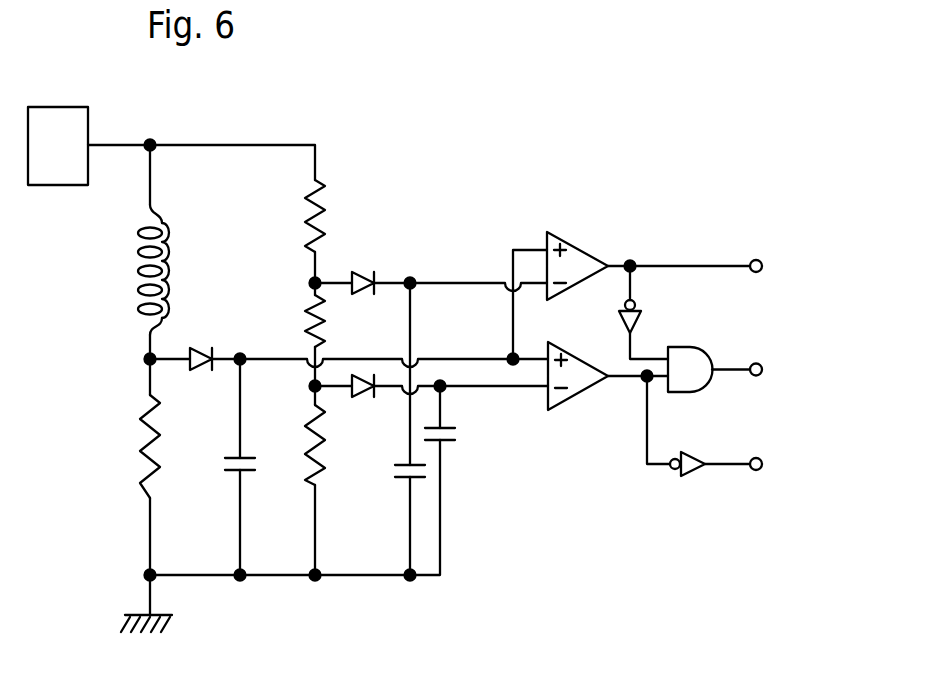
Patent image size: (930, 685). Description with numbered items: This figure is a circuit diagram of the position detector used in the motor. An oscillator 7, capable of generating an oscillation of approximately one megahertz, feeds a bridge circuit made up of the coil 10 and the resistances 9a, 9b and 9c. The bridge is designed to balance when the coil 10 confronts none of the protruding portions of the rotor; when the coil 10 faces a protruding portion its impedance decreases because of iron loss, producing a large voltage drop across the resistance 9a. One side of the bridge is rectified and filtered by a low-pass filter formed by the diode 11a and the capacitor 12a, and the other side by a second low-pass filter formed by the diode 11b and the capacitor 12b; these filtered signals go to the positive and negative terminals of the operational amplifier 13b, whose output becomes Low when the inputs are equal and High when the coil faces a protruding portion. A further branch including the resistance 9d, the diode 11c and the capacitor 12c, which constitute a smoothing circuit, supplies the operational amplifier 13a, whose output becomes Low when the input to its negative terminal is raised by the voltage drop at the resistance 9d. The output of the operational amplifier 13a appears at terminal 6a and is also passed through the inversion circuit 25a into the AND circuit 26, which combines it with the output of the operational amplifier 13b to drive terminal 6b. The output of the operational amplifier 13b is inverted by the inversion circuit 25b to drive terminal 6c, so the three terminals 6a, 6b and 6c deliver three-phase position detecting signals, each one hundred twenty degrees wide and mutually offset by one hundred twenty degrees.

The oscillator 7 is at (63, 107).
The coil 10 is at (137, 262).
The resistance 9a is at (142, 450).
The resistance 9b is at (307, 452).
The resistance 9c is at (320, 212).
The resistance 9d is at (312, 312).
The diode 11a is at (204, 346).
The diode 11b is at (365, 397).
The diode 11c is at (365, 270).
The capacitor 12a is at (234, 477).
The capacitor 12b is at (447, 445).
The capacitor 12c is at (400, 480).
The operational amplifier 13a is at (580, 250).
The operational amplifier 13b is at (582, 392).
The inversion circuit 25a is at (642, 318).
The inversion circuit 25b is at (690, 476).
The AND circuit 26 is at (712, 348).
The terminal 6a is at (762, 262).
The terminal 6b is at (763, 370).
The terminal 6c is at (763, 472).